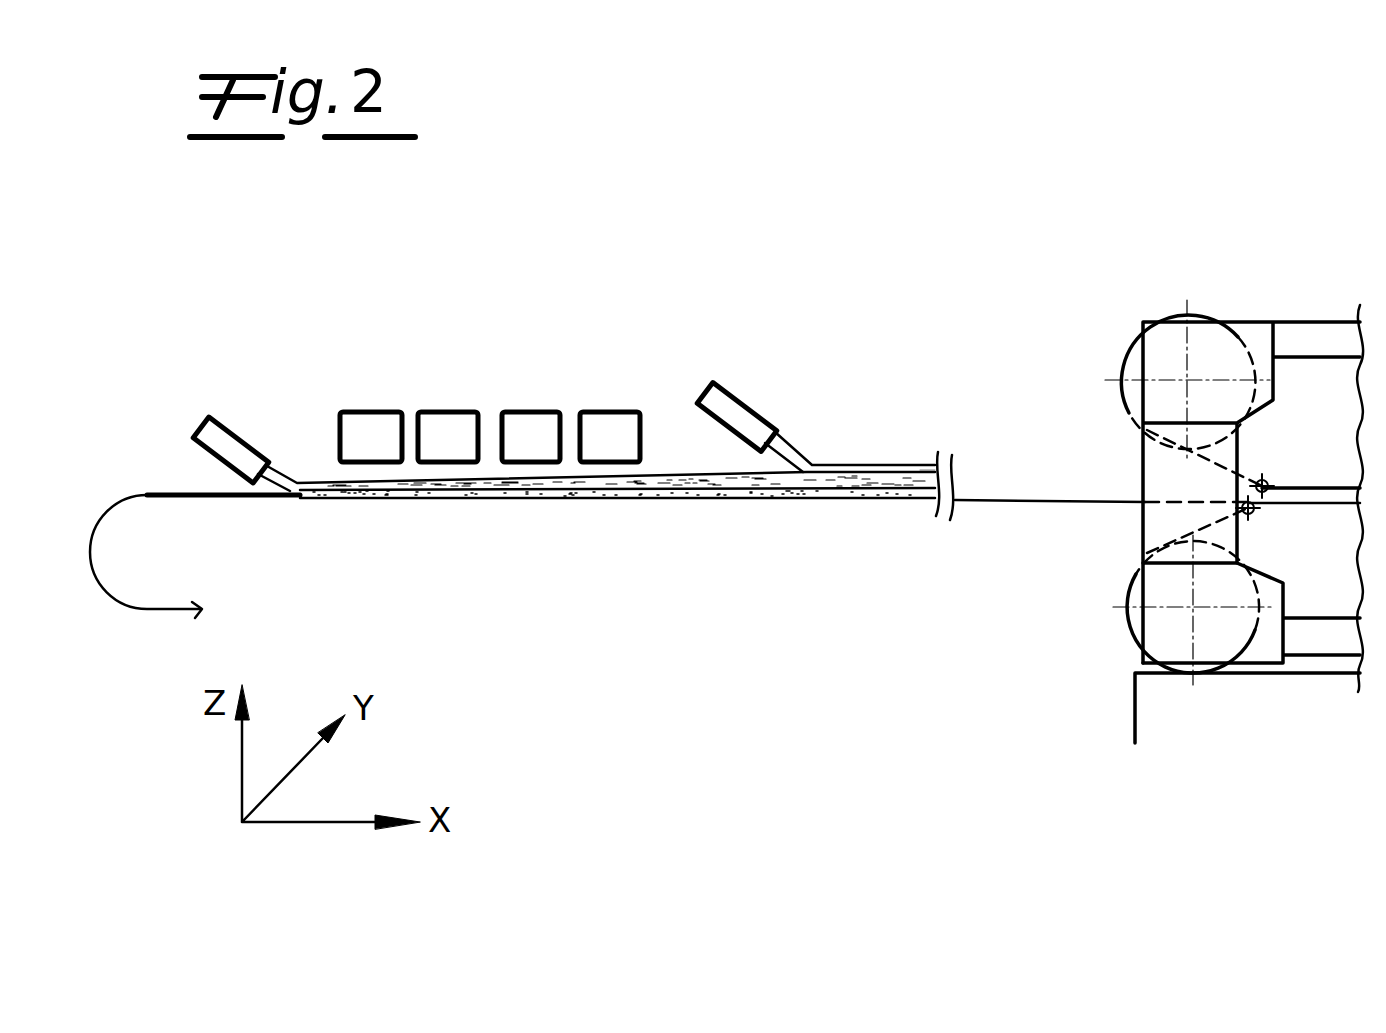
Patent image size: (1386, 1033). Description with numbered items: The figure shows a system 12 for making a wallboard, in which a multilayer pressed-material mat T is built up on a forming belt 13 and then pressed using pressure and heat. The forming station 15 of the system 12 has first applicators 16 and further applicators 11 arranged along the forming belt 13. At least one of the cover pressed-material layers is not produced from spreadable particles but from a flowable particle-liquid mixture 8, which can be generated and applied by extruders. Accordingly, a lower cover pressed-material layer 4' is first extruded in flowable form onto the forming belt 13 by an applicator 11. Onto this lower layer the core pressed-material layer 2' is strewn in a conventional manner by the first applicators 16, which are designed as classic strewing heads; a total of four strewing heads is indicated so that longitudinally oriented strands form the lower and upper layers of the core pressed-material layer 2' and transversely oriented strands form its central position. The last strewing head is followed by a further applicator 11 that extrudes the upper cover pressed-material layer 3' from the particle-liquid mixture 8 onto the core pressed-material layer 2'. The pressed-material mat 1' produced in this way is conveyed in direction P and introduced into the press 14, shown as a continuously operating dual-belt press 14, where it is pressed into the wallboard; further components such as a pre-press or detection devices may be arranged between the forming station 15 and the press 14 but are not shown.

The system 12 is at (940, 222).
The forming belt 13 is at (725, 535).
The lower covering pressed-material layer 4' is at (725, 535).
The core pressed-material layer 2' is at (596, 409).
The upper covering pressed-material layer 3' is at (850, 417).
The pressed-material mat 1' is at (910, 419).
The multilayer pressed-material mat T is at (663, 480).
The application nozzle / applicator 11 is at (228, 425).
The particle-liquid mixture 8 is at (273, 468).
The forming station 15 is at (520, 282).
The first applicators 16 is at (610, 412).
The press 14 is at (1296, 300).
The conveying direction P is at (612, 687).